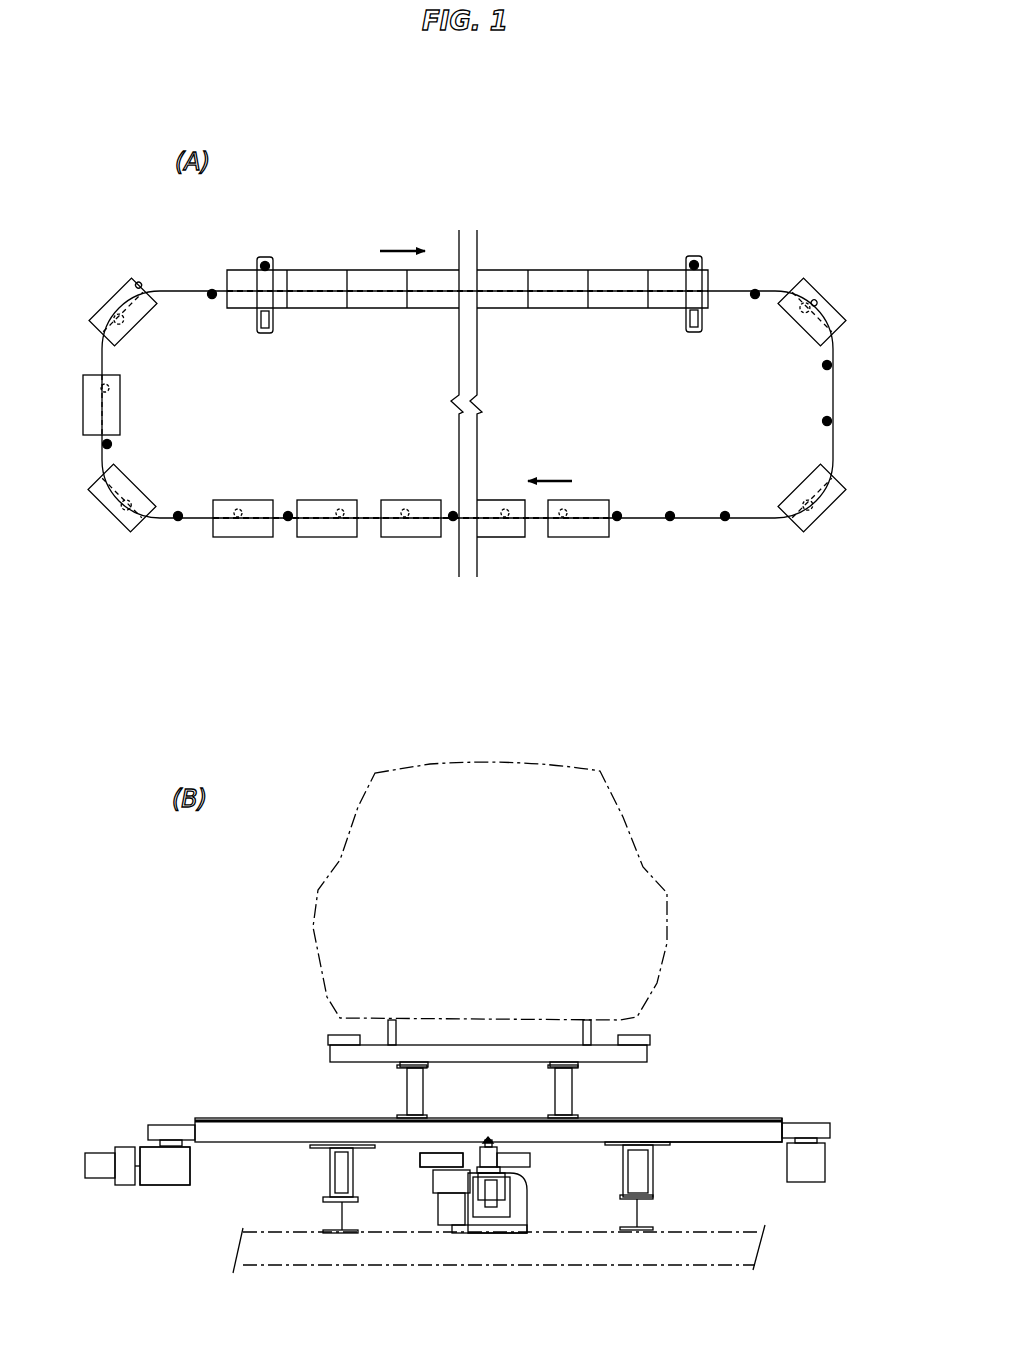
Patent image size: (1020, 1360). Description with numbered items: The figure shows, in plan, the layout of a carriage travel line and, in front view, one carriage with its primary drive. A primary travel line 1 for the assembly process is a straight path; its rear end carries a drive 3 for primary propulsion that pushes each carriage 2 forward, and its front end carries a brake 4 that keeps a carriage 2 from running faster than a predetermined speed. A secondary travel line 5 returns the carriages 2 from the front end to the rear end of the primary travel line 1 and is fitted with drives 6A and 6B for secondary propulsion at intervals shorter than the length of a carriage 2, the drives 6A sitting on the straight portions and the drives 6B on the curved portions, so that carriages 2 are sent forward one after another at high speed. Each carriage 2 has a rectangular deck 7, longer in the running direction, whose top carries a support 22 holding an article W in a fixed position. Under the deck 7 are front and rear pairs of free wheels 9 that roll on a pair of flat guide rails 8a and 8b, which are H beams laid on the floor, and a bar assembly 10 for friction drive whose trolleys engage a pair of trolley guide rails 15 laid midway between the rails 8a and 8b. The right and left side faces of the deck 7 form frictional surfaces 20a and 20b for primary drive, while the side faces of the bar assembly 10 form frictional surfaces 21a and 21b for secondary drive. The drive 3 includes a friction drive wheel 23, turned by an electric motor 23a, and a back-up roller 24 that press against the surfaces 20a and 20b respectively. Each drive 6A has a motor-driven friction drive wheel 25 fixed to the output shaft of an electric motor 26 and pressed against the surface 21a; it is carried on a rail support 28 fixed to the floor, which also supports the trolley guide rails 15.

In FIG. 1A, the primary travel line 1 is at (551, 264).
In FIG. 1A, the carriage 2 is at (322, 278).
In FIG. 1B, the carriage 2 is at (668, 1112).
In FIG. 1A, the drive for primary propulsion 3 is at (264, 338).
In FIG. 1B, the drive for primary propulsion 3 is at (157, 1117).
In FIG. 1A, the brake 4 is at (693, 337).
In FIG. 1A, the secondary travel line 5 is at (647, 528).
In FIG. 1A, the drive for secondary propulsion 6A is at (820, 366).
In FIG. 1B, the drive for secondary propulsion 6A is at (428, 1182).
In FIG. 1A, the drive for secondary propulsion 6B is at (103, 318).
In FIG. 1B, the article W is at (582, 845).
In FIG. 1B, the bar assembly 10 is at (495, 1135).
In FIG. 1B, the support 22 is at (322, 1035).
In FIG. 1B, the frictional surface for secondary drive 21a is at (480, 1158).
In FIG. 1B, the frictional surface for secondary drive 21b is at (500, 1160).
In FIG. 1B, the deck 7 is at (745, 1130).
In FIG. 1B, the frictional surface for primary drive 20a is at (178, 1128).
In FIG. 1B, the frictional surface for primary drive 20b is at (806, 1128).
In FIG. 1B, the friction drive wheel 23 is at (150, 1133).
In FIG. 1B, the electric motor 23a is at (100, 1168).
In FIG. 1B, the back-up roller 24 is at (822, 1130).
In FIG. 1B, the free wheel 9 is at (338, 1165).
In FIG. 1B, the flat guide rail 8a is at (336, 1195).
In FIG. 1B, the flat guide rail 8b is at (647, 1192).
In FIG. 1B, the friction drive wheel 25 is at (422, 1163).
In FIG. 1B, the electric motor 26 is at (450, 1210).
In FIG. 1B, the rail support 28 is at (515, 1215).
In FIG. 1B, the trolley guide rail 15 is at (470, 1196).